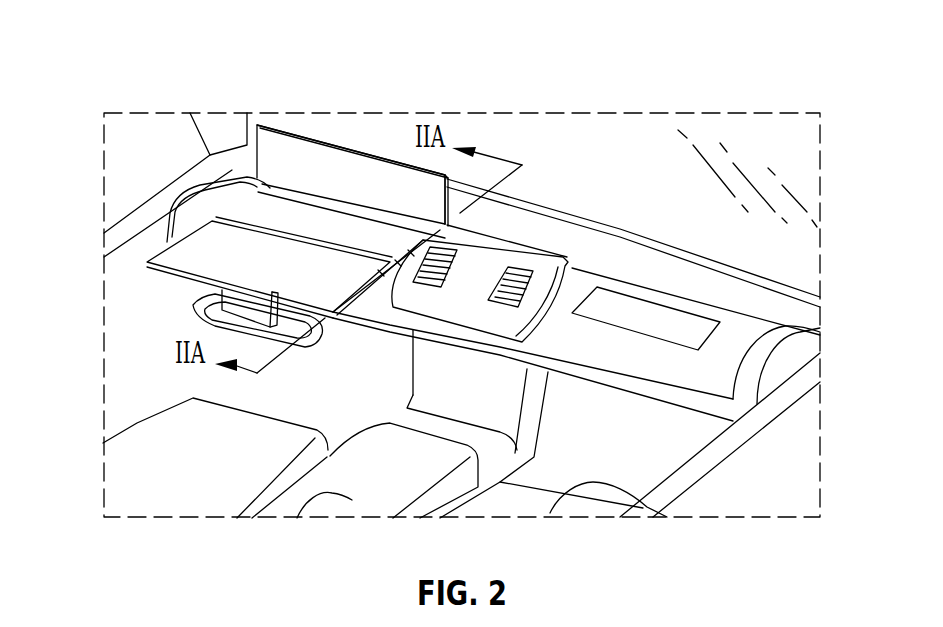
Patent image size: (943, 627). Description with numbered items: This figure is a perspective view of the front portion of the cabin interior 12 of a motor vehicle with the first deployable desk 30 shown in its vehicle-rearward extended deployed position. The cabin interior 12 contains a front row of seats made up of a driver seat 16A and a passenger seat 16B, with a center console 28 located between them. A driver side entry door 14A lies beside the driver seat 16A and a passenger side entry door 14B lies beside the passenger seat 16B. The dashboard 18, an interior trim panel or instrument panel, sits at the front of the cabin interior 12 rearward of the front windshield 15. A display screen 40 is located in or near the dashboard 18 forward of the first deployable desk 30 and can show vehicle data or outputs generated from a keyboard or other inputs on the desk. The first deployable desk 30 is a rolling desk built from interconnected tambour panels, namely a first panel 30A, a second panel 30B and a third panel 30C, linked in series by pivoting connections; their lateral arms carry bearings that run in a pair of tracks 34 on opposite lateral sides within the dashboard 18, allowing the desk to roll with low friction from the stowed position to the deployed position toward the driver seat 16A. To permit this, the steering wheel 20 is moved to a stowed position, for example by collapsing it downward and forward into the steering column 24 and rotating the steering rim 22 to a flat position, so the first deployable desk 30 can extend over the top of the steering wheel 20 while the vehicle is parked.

The cabin interior 12 is at (138, 372).
The driver side entry door 14A is at (147, 212).
The passenger side entry door 14B is at (757, 420).
The front windshield 15 is at (738, 152).
The driver seat 16A is at (163, 445).
The passenger seat 16B is at (625, 490).
The dashboard 18 is at (505, 255).
The steering wheel 20 is at (258, 184).
The steering rim 22 is at (192, 312).
The steering column 24 is at (242, 306).
The center console 28 is at (297, 518).
The first deployable desk 30 is at (230, 169).
The first panel 30A is at (188, 245).
The second panel 30B is at (285, 222).
The third panel 30C is at (333, 223).
The tracks 34 is at (205, 205).
The display screen 40 is at (377, 183).